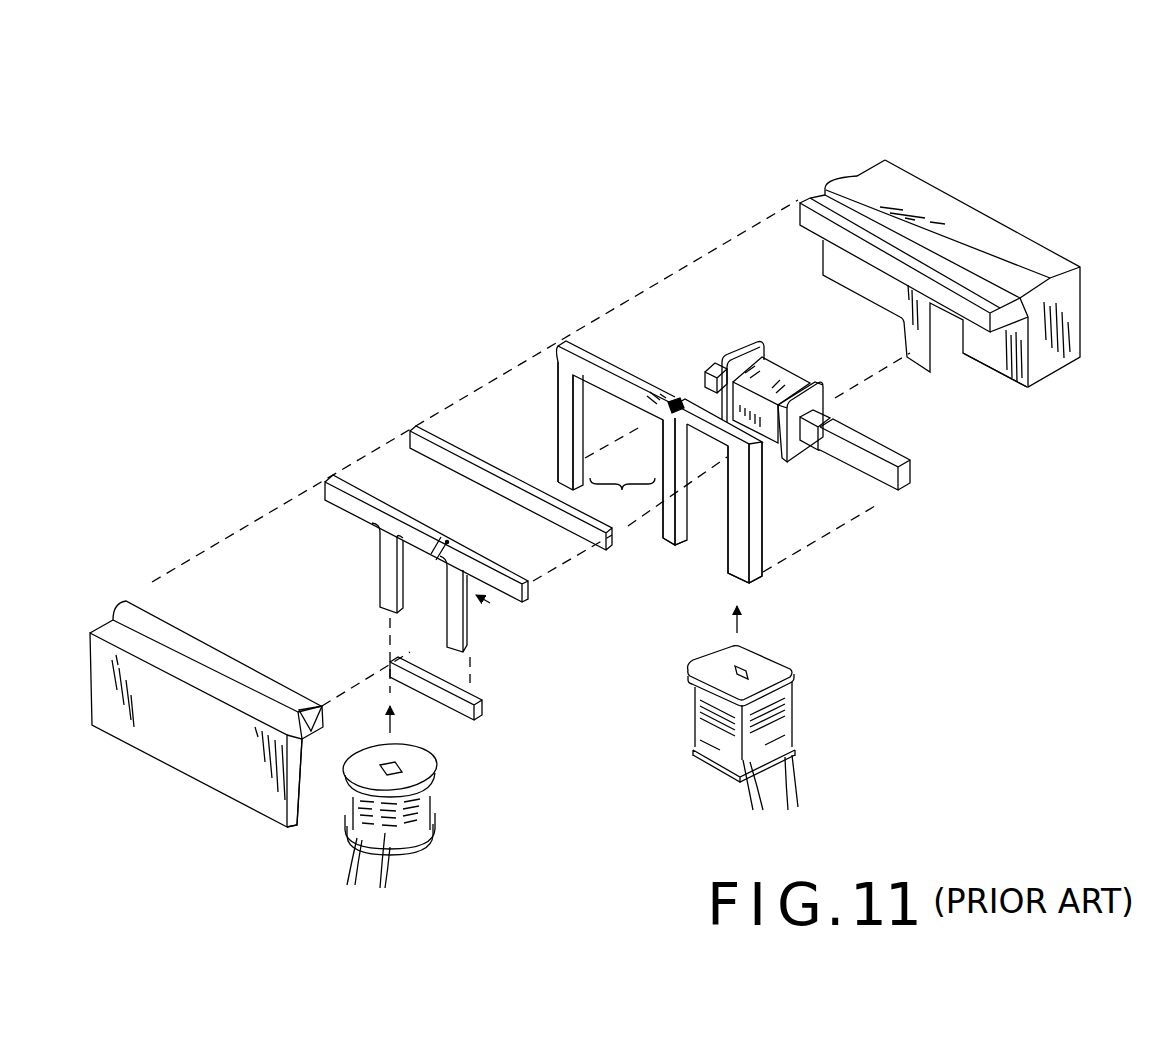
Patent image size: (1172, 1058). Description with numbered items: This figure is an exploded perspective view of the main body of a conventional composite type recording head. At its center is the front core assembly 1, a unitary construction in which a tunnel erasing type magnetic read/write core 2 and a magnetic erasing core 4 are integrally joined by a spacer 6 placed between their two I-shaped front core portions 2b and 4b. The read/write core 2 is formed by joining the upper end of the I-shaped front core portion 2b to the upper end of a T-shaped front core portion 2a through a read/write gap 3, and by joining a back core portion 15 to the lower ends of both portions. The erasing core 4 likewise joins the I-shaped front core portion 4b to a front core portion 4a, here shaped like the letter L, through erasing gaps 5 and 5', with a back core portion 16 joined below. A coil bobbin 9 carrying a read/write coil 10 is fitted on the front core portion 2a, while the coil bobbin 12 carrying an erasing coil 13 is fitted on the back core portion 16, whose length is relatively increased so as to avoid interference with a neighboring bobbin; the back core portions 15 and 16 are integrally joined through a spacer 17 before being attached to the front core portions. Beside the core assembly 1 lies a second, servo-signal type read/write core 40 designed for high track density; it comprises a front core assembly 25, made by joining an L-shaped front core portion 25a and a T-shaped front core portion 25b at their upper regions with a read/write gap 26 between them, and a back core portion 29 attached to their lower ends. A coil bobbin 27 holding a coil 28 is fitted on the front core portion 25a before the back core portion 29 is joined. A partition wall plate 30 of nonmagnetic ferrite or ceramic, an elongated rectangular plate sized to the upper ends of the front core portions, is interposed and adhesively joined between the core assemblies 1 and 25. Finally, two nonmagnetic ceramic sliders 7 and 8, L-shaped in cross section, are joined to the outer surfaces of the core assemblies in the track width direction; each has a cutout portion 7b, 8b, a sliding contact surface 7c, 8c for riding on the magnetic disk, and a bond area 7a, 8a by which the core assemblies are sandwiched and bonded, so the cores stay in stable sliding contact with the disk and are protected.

The front core assembly 1 is at (634, 523).
The magnetic read/write core 2 is at (698, 435).
The T-shaped front core portion 2a is at (735, 553).
The I-shaped front core portion 2b is at (687, 543).
The read/write gap 3 is at (673, 410).
The magnetic erasing core 4 is at (614, 405).
The front core portion 4a is at (557, 423).
The I-shaped front core portion 4b is at (663, 533).
The erasing gap 5 is at (637, 365).
The erasing gap 5' is at (660, 353).
The spacer 6 is at (670, 545).
The nonmagnetic slider 7 is at (165, 738).
The bond area 7a is at (152, 603).
The cutout portion 7b is at (307, 783).
The sliding contact surface 7c is at (237, 655).
The nonmagnetic slider 8 is at (1075, 312).
The bond area 8a is at (807, 220).
The cutout portion 8b is at (1012, 373).
The sliding contact surface 8c is at (830, 182).
The coil bobbin 9 is at (772, 675).
The read/write coil 10 is at (787, 720).
The coil bobbin 12 is at (820, 393).
The erasing coil 13 is at (778, 377).
The back core portion 15 is at (880, 473).
The back core portion 16 is at (717, 367).
The spacer 17 is at (830, 418).
The front core assembly 25 is at (482, 556).
The L-shaped front core portion 25a is at (467, 652).
The T-shaped front core portion 25b is at (380, 568).
The read/write gap 26 is at (446, 541).
The coil bobbin 27 is at (423, 763).
The coil 28 is at (430, 827).
The back core portion 29 is at (482, 711).
The partition wall plate 30 is at (430, 437).
The read/write core 40 is at (492, 605).